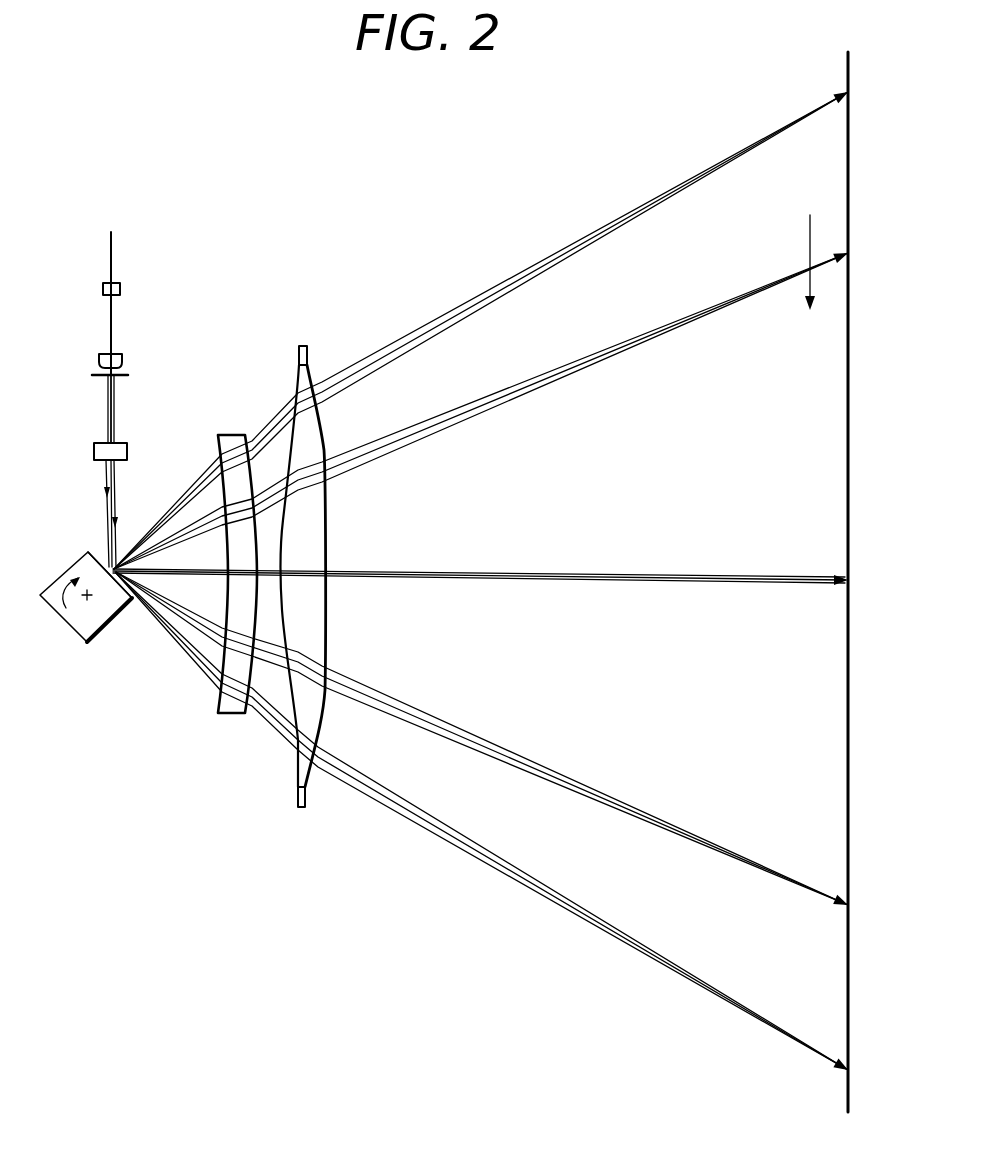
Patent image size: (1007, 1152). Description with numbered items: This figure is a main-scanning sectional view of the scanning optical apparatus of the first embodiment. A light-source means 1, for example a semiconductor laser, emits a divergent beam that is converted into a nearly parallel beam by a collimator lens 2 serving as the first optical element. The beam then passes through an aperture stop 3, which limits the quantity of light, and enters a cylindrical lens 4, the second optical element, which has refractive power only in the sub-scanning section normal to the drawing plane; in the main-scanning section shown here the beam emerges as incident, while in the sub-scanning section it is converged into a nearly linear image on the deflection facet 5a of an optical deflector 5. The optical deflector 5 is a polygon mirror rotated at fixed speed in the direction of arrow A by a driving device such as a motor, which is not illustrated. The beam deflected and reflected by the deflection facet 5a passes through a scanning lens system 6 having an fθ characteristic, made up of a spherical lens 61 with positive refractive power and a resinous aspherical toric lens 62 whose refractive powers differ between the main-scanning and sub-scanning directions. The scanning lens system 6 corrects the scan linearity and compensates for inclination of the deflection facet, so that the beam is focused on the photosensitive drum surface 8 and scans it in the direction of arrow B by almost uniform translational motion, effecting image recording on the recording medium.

The light-source means 1 is at (121, 289).
The collimator lens 2 is at (123, 360).
The aperture stop 3 is at (129, 374).
The cylindrical lens 4 is at (128, 446).
The optical deflector 5 is at (97, 622).
The deflection facet 5a is at (89, 551).
The scanning lens system 6 is at (277, 552).
The spherical lens 61 is at (228, 436).
The toric lens 62 is at (314, 567).
The photosensitive drum surface 8 is at (852, 155).
The direction of rotation A is at (66, 608).
The scanning direction B is at (809, 279).